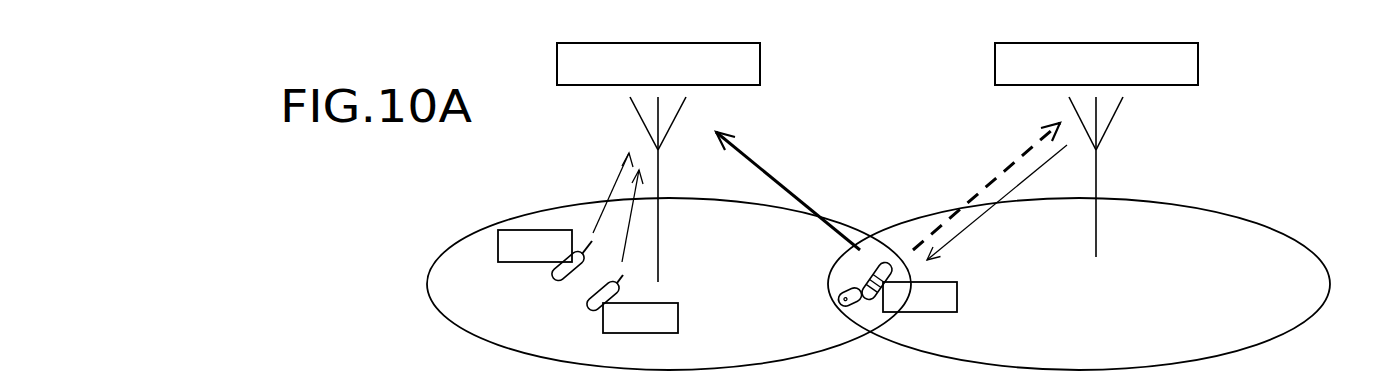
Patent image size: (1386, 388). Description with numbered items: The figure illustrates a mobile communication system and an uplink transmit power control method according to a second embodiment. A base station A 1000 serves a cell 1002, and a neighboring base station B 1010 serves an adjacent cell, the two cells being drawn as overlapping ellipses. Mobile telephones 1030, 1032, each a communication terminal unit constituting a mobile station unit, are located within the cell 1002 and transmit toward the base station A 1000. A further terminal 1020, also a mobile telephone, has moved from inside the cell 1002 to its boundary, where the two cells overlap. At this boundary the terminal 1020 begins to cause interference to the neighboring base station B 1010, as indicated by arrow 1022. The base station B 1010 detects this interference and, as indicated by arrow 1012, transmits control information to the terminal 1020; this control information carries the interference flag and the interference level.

The base station A 1000 is at (762, 76).
The base station B 1010 is at (1200, 76).
The cell 1002 is at (542, 210).
The arrow 1012 is at (983, 210).
The terminal 1020 is at (866, 309).
The arrow 1022 is at (987, 177).
The mobile telephone 1030 is at (555, 283).
The mobile telephone 1032 is at (588, 308).